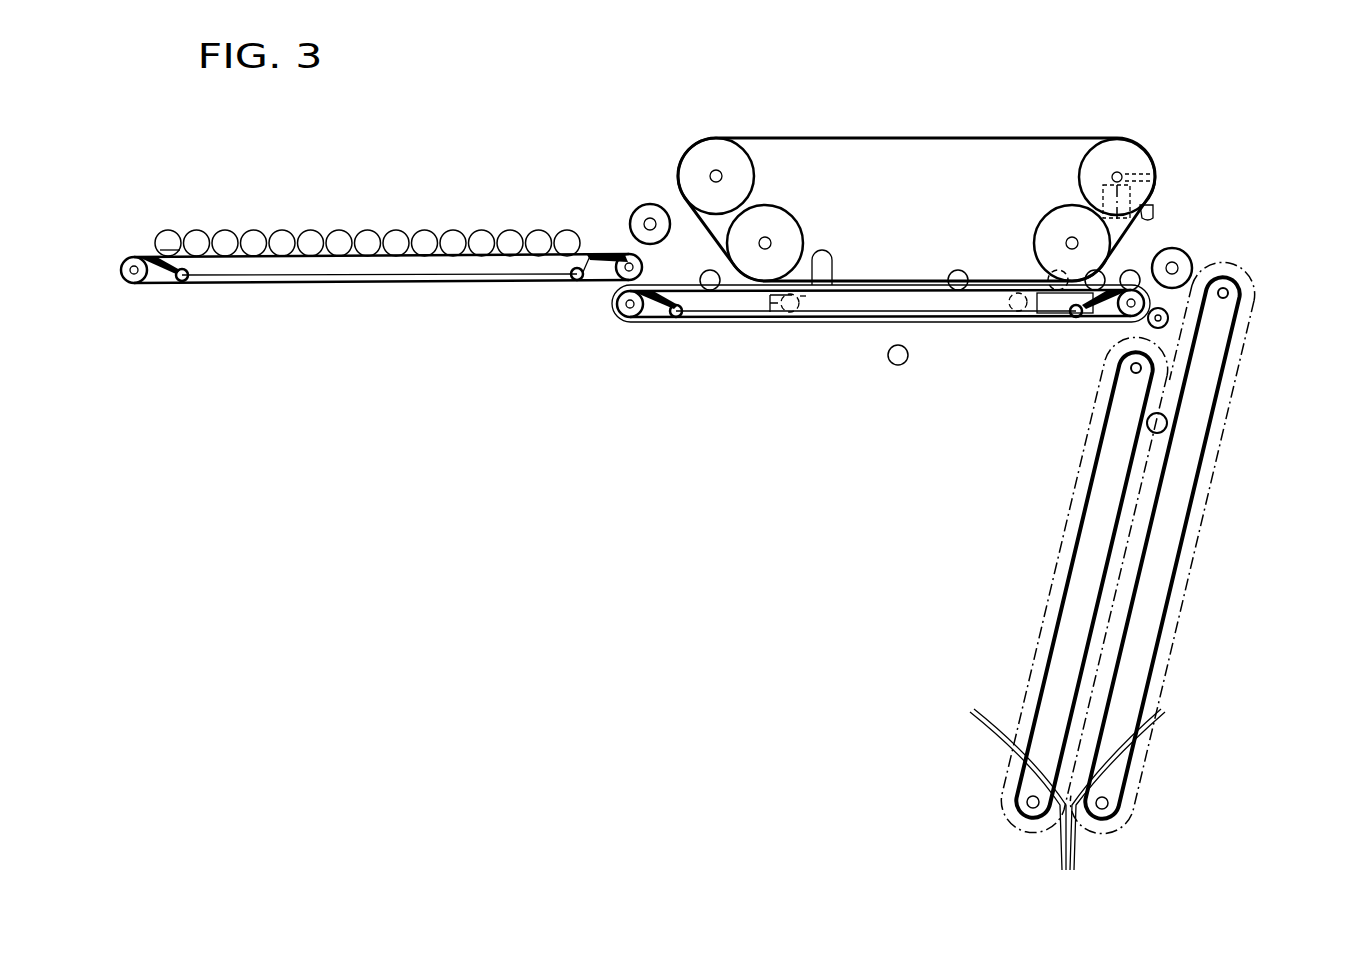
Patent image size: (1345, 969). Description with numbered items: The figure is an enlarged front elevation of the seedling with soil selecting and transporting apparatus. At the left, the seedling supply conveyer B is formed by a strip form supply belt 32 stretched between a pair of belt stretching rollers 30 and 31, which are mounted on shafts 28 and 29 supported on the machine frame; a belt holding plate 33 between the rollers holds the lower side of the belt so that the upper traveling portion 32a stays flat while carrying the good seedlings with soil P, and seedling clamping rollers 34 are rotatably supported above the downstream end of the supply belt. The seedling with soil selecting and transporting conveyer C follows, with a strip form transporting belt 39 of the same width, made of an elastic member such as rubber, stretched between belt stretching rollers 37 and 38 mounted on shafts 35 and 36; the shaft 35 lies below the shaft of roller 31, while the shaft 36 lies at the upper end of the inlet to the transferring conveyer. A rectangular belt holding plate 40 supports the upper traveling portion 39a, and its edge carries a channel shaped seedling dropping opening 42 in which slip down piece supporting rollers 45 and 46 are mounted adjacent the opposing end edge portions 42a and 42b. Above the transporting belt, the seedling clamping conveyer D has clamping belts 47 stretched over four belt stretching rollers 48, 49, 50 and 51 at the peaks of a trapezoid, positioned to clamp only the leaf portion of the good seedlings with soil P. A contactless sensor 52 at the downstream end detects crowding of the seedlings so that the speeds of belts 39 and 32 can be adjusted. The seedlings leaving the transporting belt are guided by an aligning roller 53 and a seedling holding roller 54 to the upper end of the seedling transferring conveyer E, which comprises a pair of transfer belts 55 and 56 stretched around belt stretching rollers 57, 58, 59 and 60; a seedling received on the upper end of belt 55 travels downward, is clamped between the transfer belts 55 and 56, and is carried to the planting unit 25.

The planting unit 25 is at (1073, 852).
The shaft 28 is at (138, 285).
The shaft 29 is at (620, 288).
The belt stretching roller 30 is at (137, 256).
The belt stretching roller 31 is at (624, 262).
The strip form supply belt 32 is at (266, 285).
The upper traveling portion 32a is at (207, 243).
The belt holding plate 33 is at (410, 270).
The seedling clamping rollers 34 is at (649, 205).
The shaft 35 is at (628, 314).
The shaft 36 is at (1124, 316).
The belt stretching roller 37 is at (645, 322).
The belt stretching roller 38 is at (1173, 250).
The strip form transporting belt 39 is at (687, 325).
The upper traveling portion 39a is at (832, 288).
The belt holding plate 40 is at (713, 300).
The seedling dropping opening 42 is at (864, 328).
The end edge portion 42a is at (783, 312).
The end edge portion 42b is at (1020, 312).
The slip down piece supporting roller 45 is at (797, 314).
The slip down piece supporting roller 46 is at (1020, 297).
The clamping belts 47 is at (862, 139).
The belt stretching roller 48 is at (760, 218).
The belt stretching roller 49 is at (1045, 228).
The belt stretching roller 50 is at (1110, 160).
The belt stretching roller 51 is at (716, 160).
The contactless sensor 52 is at (1150, 208).
The aligning roller 53 is at (1178, 348).
The seedling holding roller 54 is at (1120, 262).
The transfer belt 55 is at (1215, 474).
The transfer belt 56 is at (1055, 548).
The belt stretching roller 57 is at (1226, 282).
The belt stretching roller 58 is at (1118, 798).
The belt stretching roller 59 is at (1015, 800).
The belt stretching roller 60 is at (1142, 368).
The seedling supply conveyer B is at (349, 298).
The seedling with soil selecting and transporting conveyer C is at (942, 358).
The seedling clamping conveyer D is at (1152, 62).
The seedling transferring conveyer E is at (1224, 554).
The good seedlings with soil P is at (166, 238).